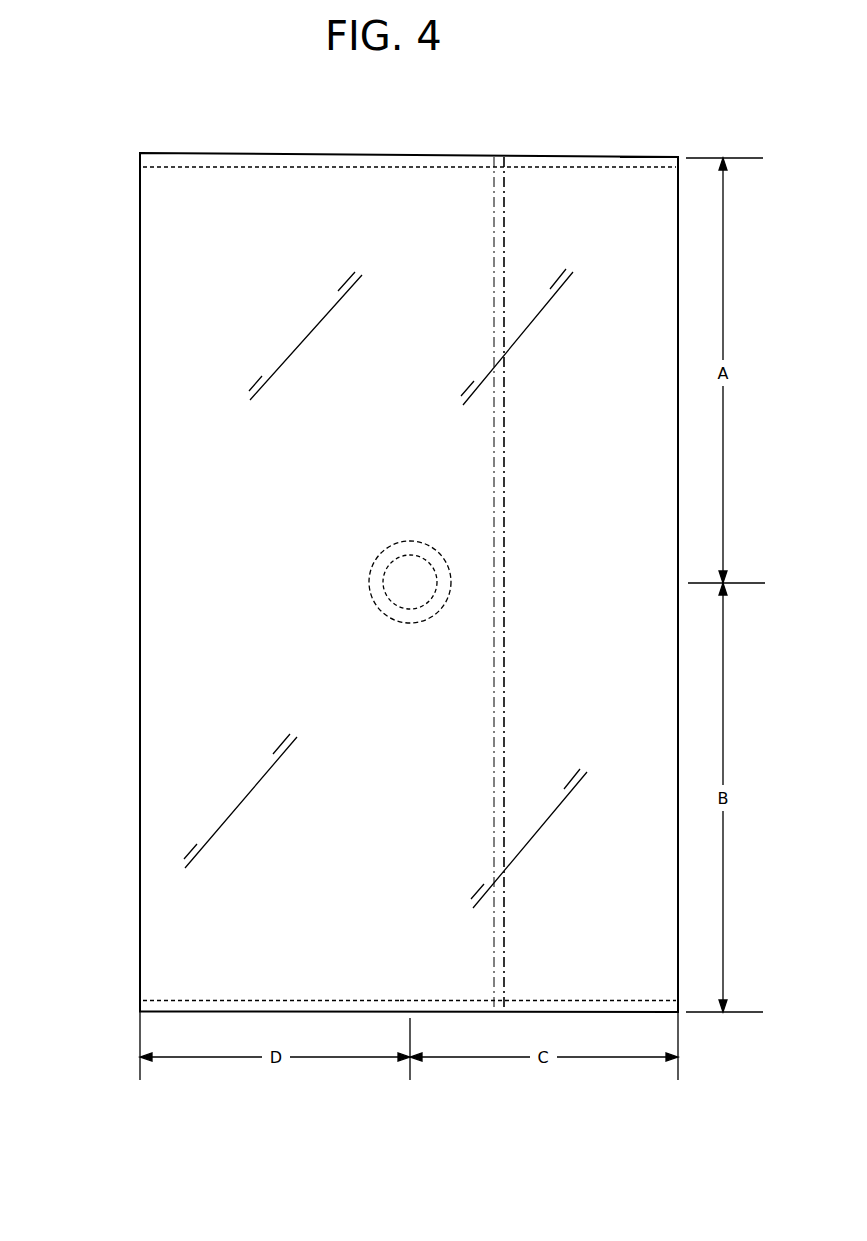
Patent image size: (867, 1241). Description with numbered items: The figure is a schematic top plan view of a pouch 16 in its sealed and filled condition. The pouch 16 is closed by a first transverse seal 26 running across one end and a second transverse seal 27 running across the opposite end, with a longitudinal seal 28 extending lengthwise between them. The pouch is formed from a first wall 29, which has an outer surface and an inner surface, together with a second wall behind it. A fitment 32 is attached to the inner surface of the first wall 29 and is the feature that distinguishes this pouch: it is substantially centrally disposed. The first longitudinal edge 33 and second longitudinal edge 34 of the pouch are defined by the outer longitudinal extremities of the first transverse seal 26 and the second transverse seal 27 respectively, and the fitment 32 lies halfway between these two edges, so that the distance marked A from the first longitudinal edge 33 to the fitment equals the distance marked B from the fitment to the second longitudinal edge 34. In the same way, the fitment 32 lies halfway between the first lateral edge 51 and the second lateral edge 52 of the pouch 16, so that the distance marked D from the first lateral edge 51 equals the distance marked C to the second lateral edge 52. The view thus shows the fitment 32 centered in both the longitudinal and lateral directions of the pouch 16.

The pouch 16 is at (118, 262).
The first transverse seal 26 is at (243, 160).
The second transverse seal 27 is at (177, 1005).
The longitudinal seal 28 is at (505, 618).
The first wall 29 is at (297, 484).
The fitment 32 is at (413, 540).
The first longitudinal edge 33 is at (578, 156).
The second longitudinal edge 34 is at (642, 1013).
The first lateral edge 51 is at (140, 586).
The second lateral edge 52 is at (680, 682).